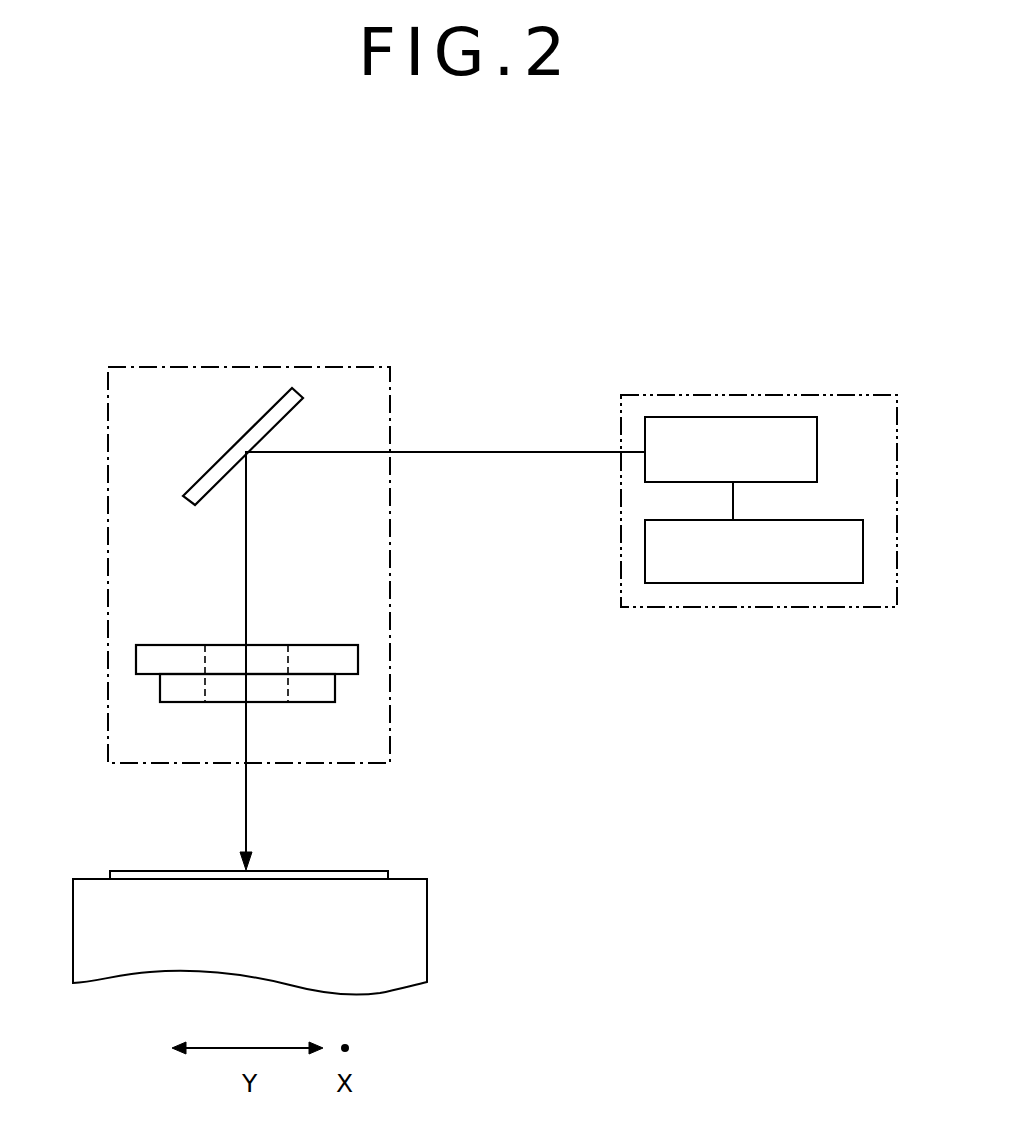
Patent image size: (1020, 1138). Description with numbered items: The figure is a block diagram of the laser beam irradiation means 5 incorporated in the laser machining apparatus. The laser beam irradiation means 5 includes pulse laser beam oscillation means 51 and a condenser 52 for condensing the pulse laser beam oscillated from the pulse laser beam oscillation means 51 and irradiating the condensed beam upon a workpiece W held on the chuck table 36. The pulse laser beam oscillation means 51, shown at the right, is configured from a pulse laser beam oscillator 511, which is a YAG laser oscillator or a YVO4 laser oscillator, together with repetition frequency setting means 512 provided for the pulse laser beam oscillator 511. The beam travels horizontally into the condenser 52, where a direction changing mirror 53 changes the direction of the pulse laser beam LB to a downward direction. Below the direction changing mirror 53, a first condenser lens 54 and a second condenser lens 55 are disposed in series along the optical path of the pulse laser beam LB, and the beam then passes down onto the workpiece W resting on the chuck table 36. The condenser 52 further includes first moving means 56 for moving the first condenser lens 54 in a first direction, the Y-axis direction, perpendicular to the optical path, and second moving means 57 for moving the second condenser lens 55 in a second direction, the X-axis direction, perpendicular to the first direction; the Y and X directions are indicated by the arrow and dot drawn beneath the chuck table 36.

The laser beam irradiation means 5 is at (537, 333).
The pulse laser beam oscillation means 51 is at (804, 394).
The pulse laser beam oscillator 511 is at (704, 417).
The repetition frequency setting means 512 is at (845, 520).
The condenser 52 is at (148, 364).
The direction changing mirror 53 is at (262, 416).
The first condenser lens 54 is at (267, 660).
The second condenser lens 55 is at (267, 688).
The first moving means 56 is at (150, 645).
The second moving means 57 is at (157, 687).
The pulse laser beam LB is at (247, 547).
The workpiece W is at (118, 870).
The chuck table 36 is at (405, 938).